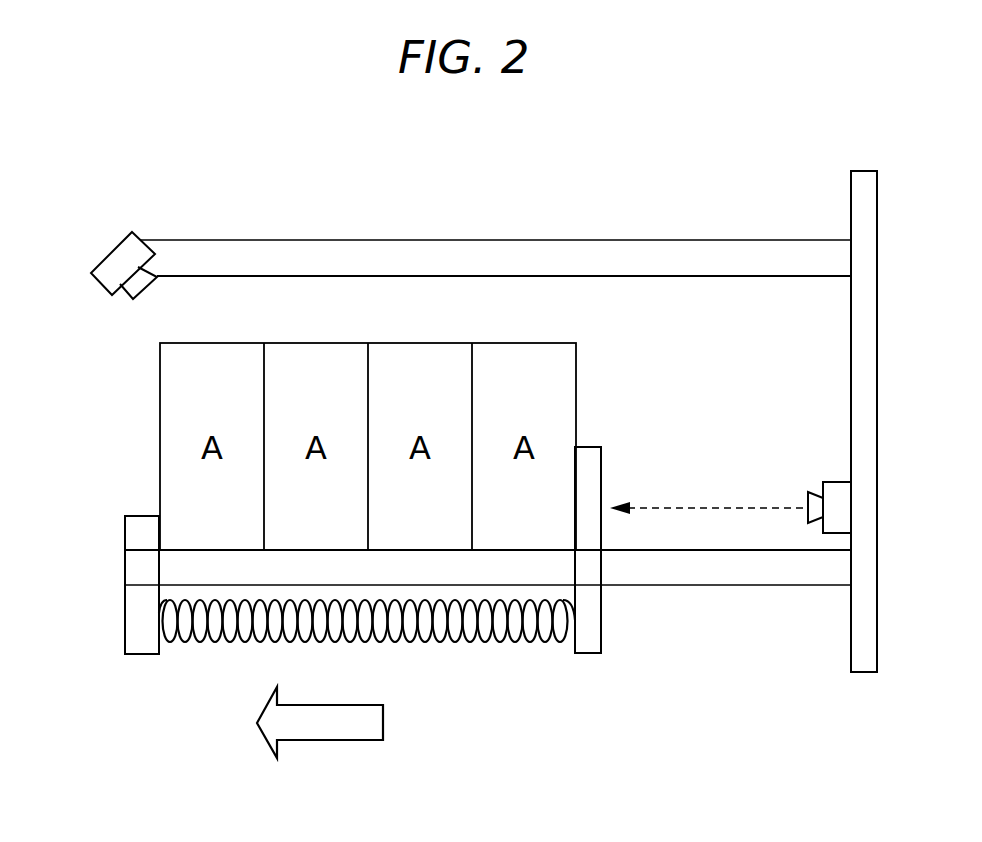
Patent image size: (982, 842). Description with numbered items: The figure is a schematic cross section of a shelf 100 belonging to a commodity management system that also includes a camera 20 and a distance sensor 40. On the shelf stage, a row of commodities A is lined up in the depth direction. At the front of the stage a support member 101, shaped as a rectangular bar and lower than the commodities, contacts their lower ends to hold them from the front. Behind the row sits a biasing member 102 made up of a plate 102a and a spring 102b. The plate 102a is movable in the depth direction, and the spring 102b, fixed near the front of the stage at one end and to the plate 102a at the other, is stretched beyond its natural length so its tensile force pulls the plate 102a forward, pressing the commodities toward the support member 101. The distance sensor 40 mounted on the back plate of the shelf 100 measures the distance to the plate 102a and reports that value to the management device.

The shelf 100 is at (865, 171).
The camera 20 is at (102, 262).
The support member 101 is at (125, 533).
The plate 102a is at (601, 640).
The spring 102b is at (527, 643).
The biasing member 102 is at (687, 733).
The distance sensor 40 is at (835, 482).